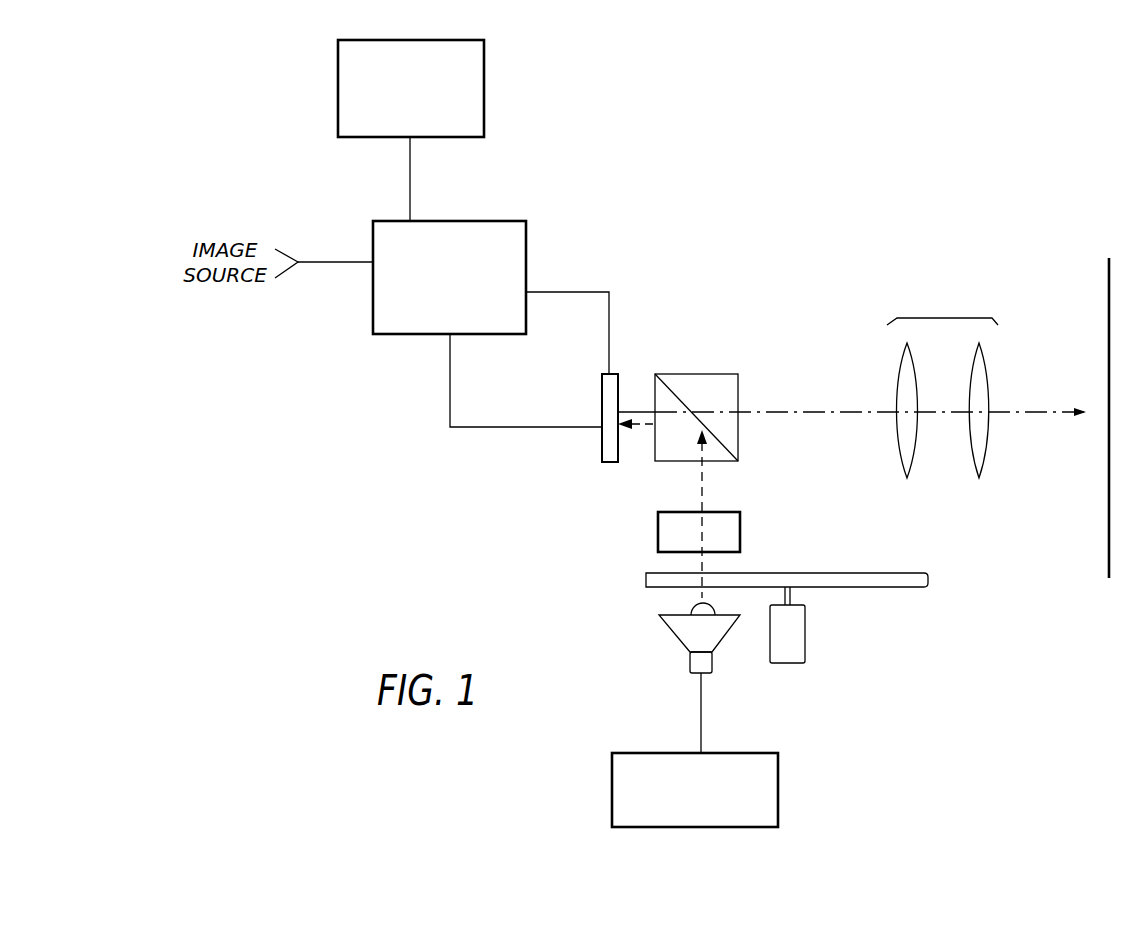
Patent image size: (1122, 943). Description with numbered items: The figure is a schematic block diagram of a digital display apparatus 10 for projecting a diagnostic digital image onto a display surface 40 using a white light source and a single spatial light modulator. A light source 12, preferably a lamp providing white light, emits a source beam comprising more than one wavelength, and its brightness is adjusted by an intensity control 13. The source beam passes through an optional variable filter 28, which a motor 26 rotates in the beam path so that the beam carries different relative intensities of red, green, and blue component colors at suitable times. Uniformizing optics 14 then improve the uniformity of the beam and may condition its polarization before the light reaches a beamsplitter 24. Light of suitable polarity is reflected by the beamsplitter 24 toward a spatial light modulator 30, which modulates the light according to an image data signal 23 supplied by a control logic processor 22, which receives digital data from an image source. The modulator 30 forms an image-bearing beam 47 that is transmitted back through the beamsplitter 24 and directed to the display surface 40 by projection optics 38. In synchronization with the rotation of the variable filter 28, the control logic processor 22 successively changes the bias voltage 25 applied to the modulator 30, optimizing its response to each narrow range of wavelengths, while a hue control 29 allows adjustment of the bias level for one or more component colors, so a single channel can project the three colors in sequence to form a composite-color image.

The digital display apparatus 10 is at (863, 238).
The light source 12 is at (690, 662).
The intensity control 13 is at (778, 790).
The uniformizing optics 14 is at (658, 530).
The control logic processor 22 is at (468, 221).
The image data signal 23 is at (578, 292).
The beamsplitter 24 is at (700, 372).
The bias voltage 25 is at (466, 428).
The motor 26 is at (805, 633).
The variable filter 28 is at (913, 587).
The hue control 29 is at (484, 80).
The spatial light modulator 30 is at (602, 442).
The projection optics 38 is at (937, 318).
The display surface 40 is at (1109, 290).
The image-bearing beam 47 is at (833, 415).